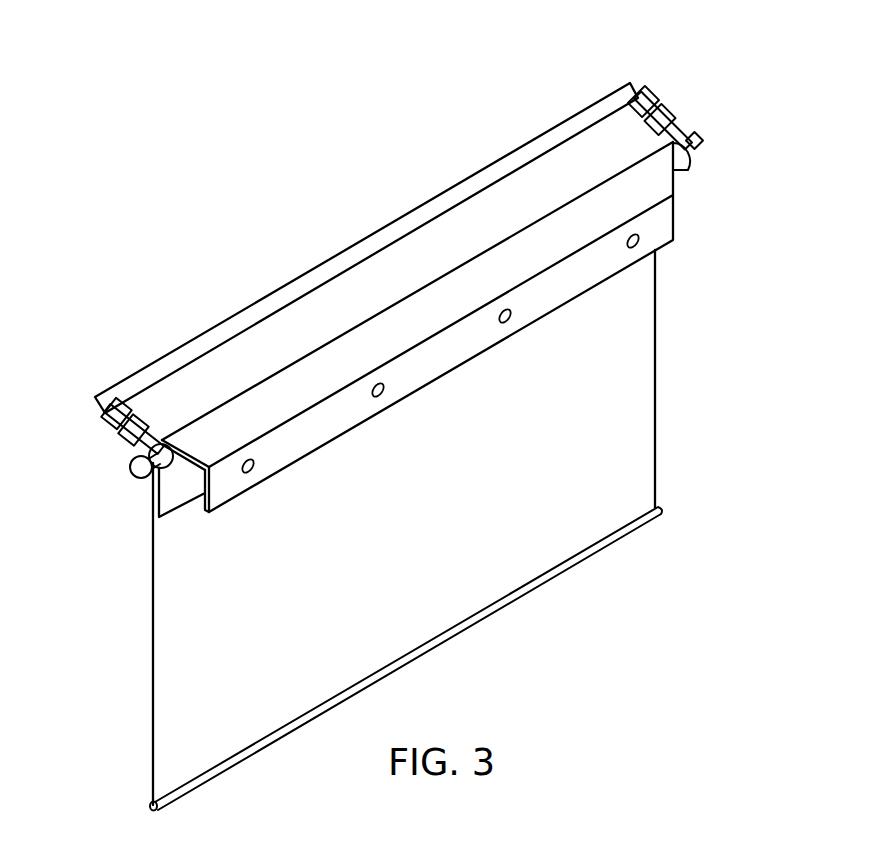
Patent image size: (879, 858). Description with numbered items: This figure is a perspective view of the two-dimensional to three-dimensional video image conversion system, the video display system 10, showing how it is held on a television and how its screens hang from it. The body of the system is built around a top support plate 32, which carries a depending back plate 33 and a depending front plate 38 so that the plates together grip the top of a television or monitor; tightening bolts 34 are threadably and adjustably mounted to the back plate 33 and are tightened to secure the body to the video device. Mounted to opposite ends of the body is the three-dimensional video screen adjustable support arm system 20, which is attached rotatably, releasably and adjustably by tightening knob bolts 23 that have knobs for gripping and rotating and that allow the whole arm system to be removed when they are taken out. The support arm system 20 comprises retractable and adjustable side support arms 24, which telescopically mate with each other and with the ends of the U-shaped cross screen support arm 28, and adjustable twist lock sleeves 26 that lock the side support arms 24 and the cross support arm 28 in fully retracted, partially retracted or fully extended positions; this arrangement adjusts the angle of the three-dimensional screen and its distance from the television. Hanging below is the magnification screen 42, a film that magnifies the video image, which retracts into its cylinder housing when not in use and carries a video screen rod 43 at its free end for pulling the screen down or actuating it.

The video display system 10 is at (170, 155).
The 3-D video screen adjustable support arm system 20 is at (161, 340).
The tightening knob bolts 23 is at (697, 140).
The side support arms 24 is at (123, 420).
The adjustable twist lock sleeves 26 is at (103, 422).
The U-shaped cross screen support arm 28 is at (320, 258).
The top support plate 32 is at (452, 293).
The back plate 33 is at (228, 498).
The tightening bolts 34 is at (645, 240).
The front plate 38 is at (139, 480).
The magnification screen 42 is at (633, 327).
The video screen rod 43 is at (660, 507).